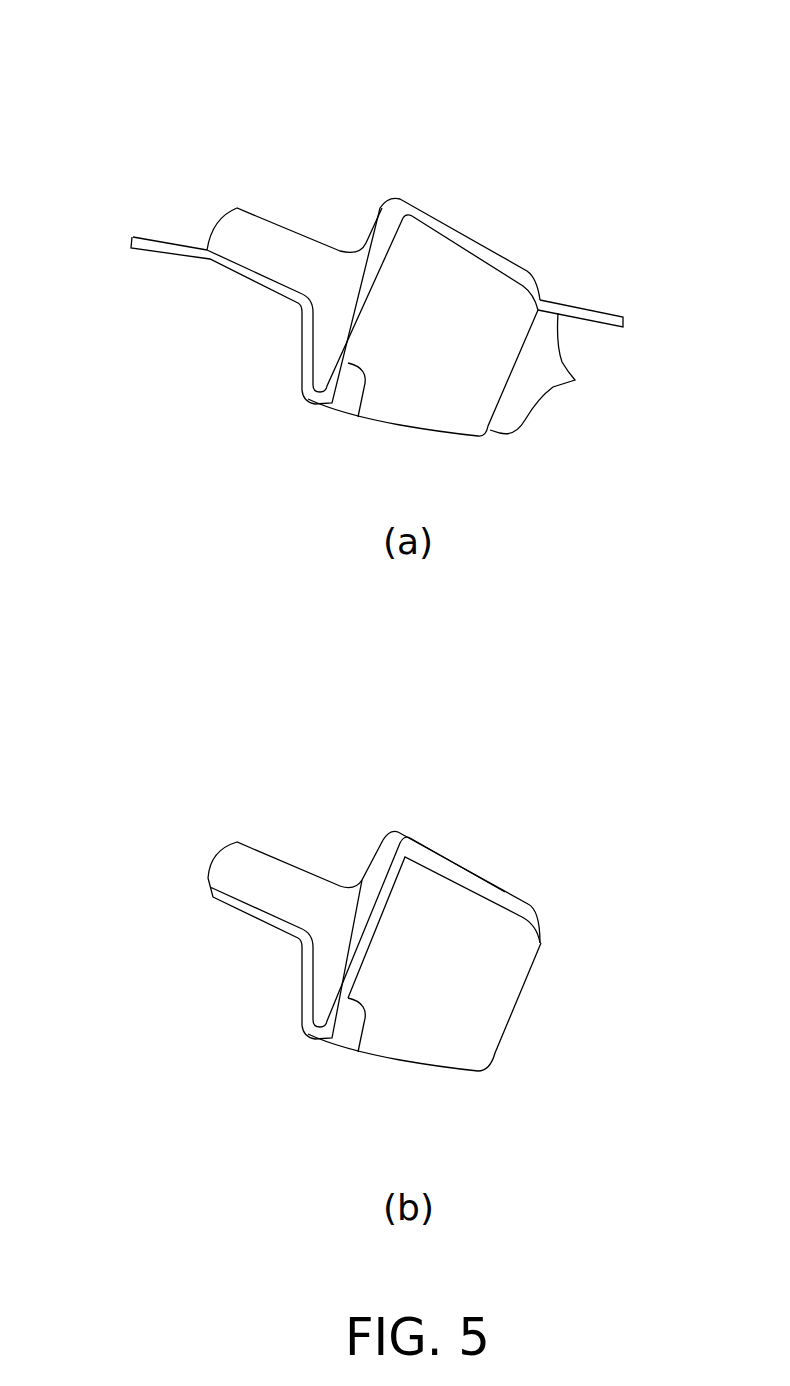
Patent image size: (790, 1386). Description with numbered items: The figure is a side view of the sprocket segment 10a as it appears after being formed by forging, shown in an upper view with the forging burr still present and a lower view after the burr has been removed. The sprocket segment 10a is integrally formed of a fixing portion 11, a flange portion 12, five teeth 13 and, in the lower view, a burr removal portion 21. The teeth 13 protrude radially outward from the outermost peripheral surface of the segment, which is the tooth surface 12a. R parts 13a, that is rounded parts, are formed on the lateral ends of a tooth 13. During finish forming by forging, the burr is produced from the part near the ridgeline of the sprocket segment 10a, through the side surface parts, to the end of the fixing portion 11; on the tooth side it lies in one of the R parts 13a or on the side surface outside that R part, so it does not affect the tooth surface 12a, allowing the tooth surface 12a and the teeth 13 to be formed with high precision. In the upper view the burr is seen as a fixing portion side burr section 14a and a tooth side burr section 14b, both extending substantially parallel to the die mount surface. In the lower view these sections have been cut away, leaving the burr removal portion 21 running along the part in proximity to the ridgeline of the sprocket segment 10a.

The sprocket segment 10a is at (176, 86).
The fixing portion 11 is at (277, 233).
The flange portion 12 is at (322, 375).
The tooth surface 12a is at (357, 418).
The teeth 13 is at (438, 417).
The R parts 13a is at (562, 373).
The fixing portion side burr section 14a is at (148, 246).
The tooth side burr section 14b is at (590, 320).
The burr removal portion 21 is at (440, 863).